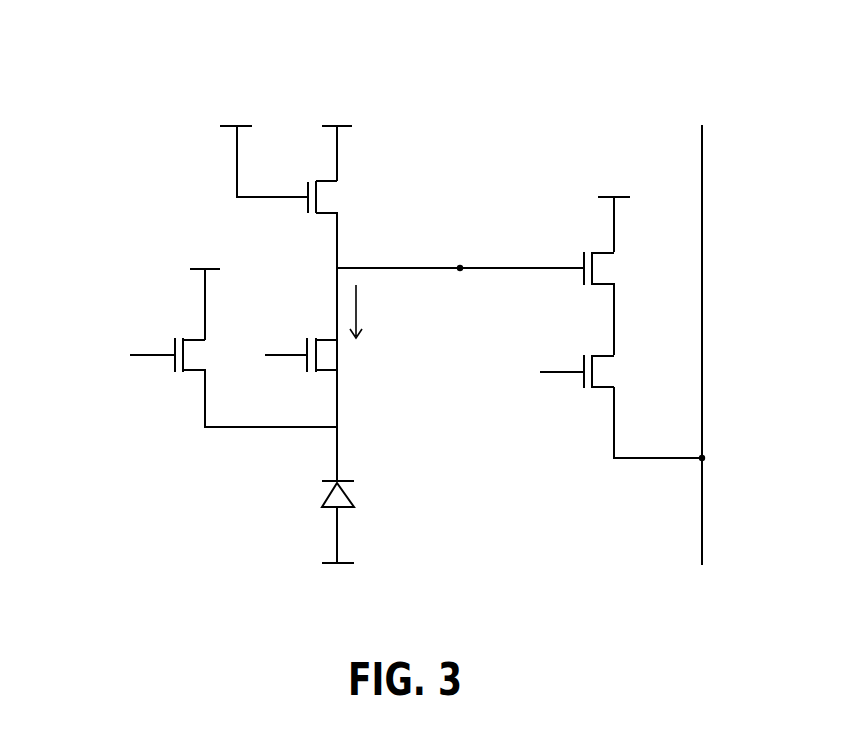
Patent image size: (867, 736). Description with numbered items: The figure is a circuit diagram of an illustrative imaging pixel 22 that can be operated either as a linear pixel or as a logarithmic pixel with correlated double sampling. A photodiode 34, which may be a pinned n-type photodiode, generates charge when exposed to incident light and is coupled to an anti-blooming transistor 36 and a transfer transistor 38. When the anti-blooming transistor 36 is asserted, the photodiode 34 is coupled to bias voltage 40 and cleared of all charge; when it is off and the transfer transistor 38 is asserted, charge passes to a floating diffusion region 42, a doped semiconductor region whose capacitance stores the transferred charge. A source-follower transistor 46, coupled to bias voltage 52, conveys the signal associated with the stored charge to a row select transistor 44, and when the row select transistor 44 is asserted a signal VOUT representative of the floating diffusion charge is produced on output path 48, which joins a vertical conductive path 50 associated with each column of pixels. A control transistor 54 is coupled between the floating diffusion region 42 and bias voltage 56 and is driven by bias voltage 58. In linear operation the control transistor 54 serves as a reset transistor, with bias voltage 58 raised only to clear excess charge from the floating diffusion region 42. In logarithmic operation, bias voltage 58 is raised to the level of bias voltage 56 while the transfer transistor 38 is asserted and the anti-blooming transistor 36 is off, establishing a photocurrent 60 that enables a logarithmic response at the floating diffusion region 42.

The pixel 22 is at (88, 75).
The photodiode 34 is at (312, 496).
The anti-blooming transistor 36 is at (176, 387).
The transfer transistor 38 is at (353, 365).
The bias voltage 40 is at (175, 265).
The floating diffusion region 42 is at (477, 252).
The row select transistor 44 is at (621, 373).
The source-follower transistor 46 is at (620, 269).
The output path 48 is at (640, 462).
The vertical conductive path 50 is at (703, 182).
The bias voltage 52 is at (586, 194).
The control transistor 54 is at (363, 193).
The bias voltage 56 is at (373, 114).
The bias voltage 58 is at (273, 114).
The photocurrent 60 is at (352, 305).